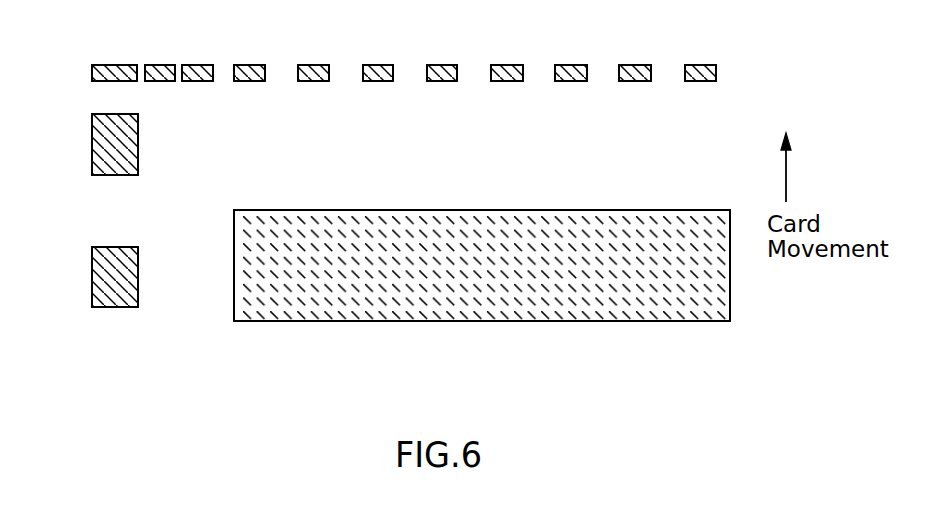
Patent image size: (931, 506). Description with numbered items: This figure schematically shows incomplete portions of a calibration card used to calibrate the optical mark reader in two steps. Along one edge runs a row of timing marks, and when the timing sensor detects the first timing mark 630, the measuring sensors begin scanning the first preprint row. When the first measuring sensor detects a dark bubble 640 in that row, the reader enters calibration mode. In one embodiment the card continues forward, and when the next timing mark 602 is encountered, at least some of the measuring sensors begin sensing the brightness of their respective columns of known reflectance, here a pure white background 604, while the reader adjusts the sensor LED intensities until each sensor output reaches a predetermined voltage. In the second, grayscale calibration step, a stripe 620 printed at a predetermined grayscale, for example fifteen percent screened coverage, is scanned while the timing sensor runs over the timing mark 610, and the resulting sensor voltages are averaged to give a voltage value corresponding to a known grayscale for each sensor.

The timing mark 602 is at (92, 130).
The pure white background 604 is at (395, 156).
The timing mark 610 is at (92, 292).
The stripe 620 is at (401, 321).
The first timing mark 630 is at (115, 65).
The dark bubble 640 is at (195, 65).